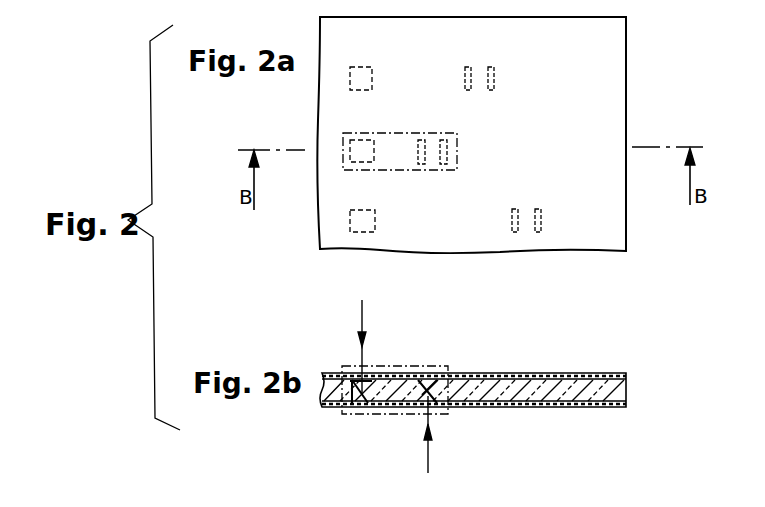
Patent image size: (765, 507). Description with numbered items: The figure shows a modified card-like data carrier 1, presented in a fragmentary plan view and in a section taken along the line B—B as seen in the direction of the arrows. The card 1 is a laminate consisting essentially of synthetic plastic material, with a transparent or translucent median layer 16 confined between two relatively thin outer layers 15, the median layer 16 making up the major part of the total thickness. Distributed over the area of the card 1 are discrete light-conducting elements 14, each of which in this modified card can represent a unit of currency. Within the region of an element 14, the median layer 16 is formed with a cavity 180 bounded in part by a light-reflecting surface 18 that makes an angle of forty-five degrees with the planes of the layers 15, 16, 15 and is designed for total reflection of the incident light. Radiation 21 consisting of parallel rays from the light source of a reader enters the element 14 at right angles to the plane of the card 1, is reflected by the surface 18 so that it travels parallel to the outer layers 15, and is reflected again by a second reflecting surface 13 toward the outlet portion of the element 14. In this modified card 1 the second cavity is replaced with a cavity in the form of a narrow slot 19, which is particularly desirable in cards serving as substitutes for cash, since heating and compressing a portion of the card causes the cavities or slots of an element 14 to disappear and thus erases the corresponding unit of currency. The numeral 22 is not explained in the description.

In FIG. 2B, the card-like data carrier 1 is at (547, 372).
In FIG. 2B, the second reflecting surface 13 is at (436, 397).
In FIG. 2A, the light-conducting element 14 is at (396, 170).
In FIG. 2B, the light-conducting element 14 is at (405, 370).
In FIG. 2B, the outer layer 15 is at (608, 376).
In FIG. 2B, the median layer 16 is at (618, 390).
In FIG. 2B, the light-reflecting surface 18 is at (340, 398).
In FIG. 2B, the cavity 180 is at (360, 410).
In FIG. 2A, the narrow slot 19 is at (442, 146).
In FIG. 2B, the narrow slot 19 is at (428, 388).
In FIG. 2B, the radiation 21 is at (360, 350).
In FIG. 2B, the removal direction arrow 22 is at (428, 464).